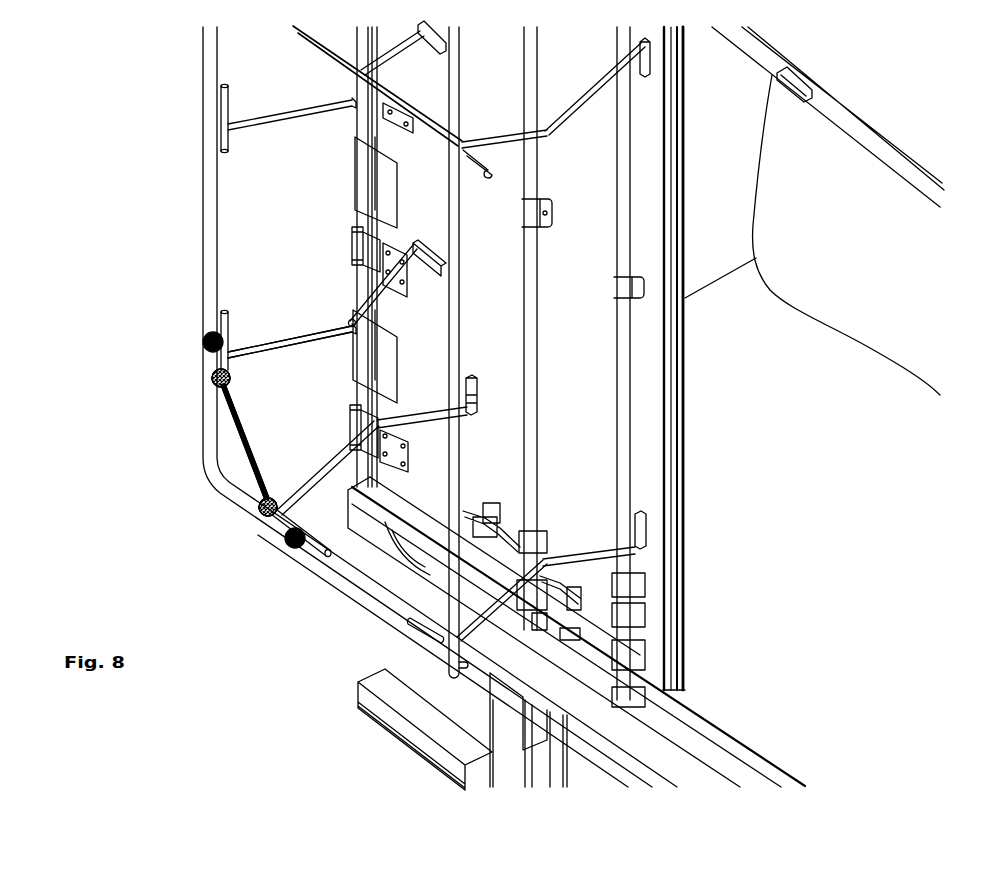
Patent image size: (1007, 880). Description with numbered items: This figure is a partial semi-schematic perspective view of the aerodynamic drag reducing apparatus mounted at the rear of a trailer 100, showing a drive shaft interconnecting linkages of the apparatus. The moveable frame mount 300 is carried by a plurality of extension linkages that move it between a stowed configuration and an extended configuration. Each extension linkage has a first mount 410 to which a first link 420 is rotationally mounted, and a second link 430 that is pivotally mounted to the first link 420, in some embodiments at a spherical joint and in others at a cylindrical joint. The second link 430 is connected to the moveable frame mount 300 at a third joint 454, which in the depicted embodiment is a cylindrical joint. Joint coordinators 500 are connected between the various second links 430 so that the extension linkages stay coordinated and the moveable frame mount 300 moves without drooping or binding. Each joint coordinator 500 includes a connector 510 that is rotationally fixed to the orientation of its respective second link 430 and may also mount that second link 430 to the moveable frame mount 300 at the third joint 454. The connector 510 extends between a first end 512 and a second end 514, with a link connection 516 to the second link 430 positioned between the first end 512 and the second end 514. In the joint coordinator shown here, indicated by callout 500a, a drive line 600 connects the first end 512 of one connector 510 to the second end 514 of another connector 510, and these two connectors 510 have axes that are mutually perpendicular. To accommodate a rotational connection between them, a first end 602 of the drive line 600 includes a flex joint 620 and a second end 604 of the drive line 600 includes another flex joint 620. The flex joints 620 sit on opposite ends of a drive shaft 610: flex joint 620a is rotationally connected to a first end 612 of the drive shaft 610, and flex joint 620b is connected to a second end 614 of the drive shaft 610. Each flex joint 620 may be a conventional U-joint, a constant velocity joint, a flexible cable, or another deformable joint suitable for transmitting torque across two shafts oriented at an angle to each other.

The trailer 100 is at (893, 84).
The moveable frame mount 300 is at (210, 200).
The first mount 410 is at (478, 388).
The first link 420 is at (380, 313).
The second link 430 is at (330, 475).
The third joint 454 is at (205, 344).
The joint coordinator 500 is at (230, 330).
The joint coordinator 500a is at (290, 332).
The connector 510 is at (225, 100).
The first end 512 is at (225, 82).
The second end 514 is at (225, 152).
The link connection 516 is at (228, 128).
The drive line 600 is at (238, 422).
The first end 602 is at (230, 378).
The second end 604 is at (271, 499).
The drive shaft 610 is at (250, 463).
The first end 612 is at (231, 383).
The second end 614 is at (262, 500).
The flex joint 620 is at (213, 386).
The flex joint 620a is at (195, 400).
The flex joint 620b is at (240, 521).